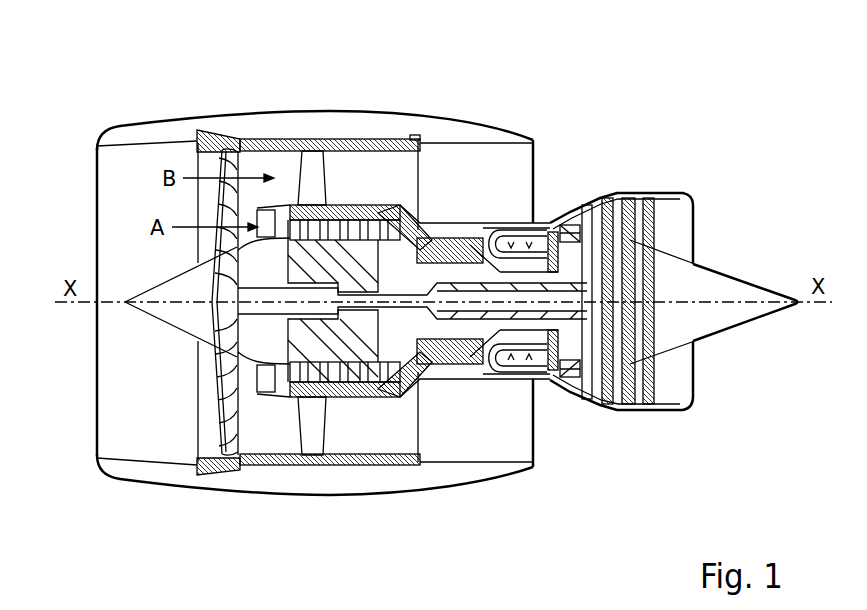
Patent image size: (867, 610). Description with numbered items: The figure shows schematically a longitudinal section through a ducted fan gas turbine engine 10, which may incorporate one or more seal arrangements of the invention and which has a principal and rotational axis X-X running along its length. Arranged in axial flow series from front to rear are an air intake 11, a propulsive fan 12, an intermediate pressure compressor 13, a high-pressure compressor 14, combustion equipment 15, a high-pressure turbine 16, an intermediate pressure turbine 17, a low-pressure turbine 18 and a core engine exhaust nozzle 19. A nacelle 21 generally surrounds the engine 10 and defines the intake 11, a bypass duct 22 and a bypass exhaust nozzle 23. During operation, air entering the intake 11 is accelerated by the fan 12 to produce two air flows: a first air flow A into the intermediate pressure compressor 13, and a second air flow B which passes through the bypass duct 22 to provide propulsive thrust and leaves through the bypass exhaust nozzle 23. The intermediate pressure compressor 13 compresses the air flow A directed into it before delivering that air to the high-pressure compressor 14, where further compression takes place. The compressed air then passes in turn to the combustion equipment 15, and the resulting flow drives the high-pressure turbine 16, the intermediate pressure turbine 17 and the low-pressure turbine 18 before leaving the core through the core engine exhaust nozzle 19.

The ducted fan gas turbine engine 10 is at (140, 82).
The air intake 11 is at (143, 145).
The propulsive fan 12 is at (217, 418).
The intermediate pressure compressor 13 is at (358, 400).
The high-pressure compressor 14 is at (443, 238).
The combustion equipment 15 is at (475, 387).
The high-pressure turbine 16 is at (527, 395).
The intermediate pressure turbine 17 is at (580, 207).
The low-pressure turbine 18 is at (597, 398).
The core engine exhaust nozzle 19 is at (680, 191).
The nacelle 21 is at (352, 125).
The bypass duct 22 is at (493, 181).
The bypass exhaust nozzle 23 is at (533, 140).